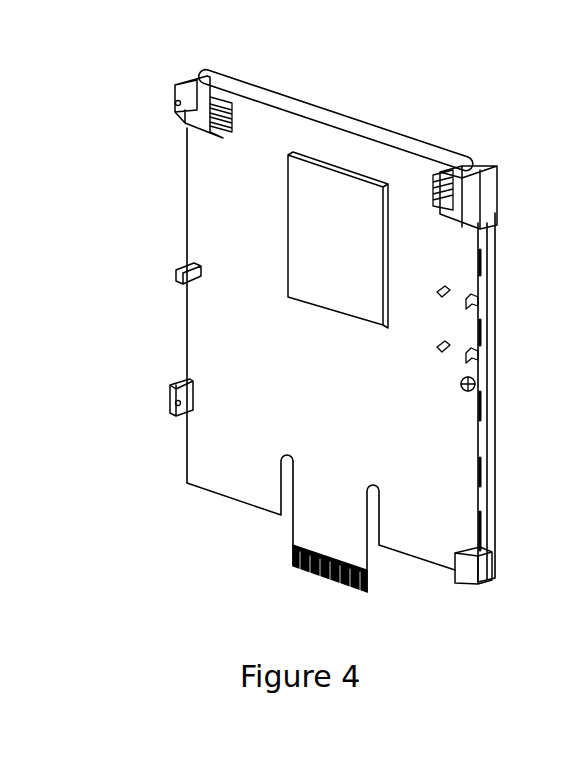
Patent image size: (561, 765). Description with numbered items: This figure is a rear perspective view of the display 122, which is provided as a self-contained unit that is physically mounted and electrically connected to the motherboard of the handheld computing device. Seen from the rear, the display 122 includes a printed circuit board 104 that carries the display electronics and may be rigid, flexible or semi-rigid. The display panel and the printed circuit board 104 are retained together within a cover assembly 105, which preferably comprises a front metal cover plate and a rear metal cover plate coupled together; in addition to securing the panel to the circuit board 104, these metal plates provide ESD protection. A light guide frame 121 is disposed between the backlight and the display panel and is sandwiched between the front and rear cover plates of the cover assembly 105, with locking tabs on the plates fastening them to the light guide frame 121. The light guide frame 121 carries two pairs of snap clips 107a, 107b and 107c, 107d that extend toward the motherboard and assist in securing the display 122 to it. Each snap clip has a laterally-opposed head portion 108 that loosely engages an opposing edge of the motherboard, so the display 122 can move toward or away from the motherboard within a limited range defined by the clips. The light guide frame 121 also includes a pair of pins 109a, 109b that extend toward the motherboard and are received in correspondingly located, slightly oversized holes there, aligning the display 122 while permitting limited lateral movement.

The printed circuit board 104 is at (228, 486).
The cover assembly 105 is at (497, 470).
The snap clip 107a is at (208, 75).
The snap clip 107b is at (450, 170).
The snap clip 107c is at (182, 385).
The snap clip 107d is at (453, 553).
The head portion 108 is at (176, 101).
The pin 109a is at (174, 273).
The pin 109b is at (461, 381).
The light guide frame 121 is at (483, 278).
The display 122 is at (304, 84).